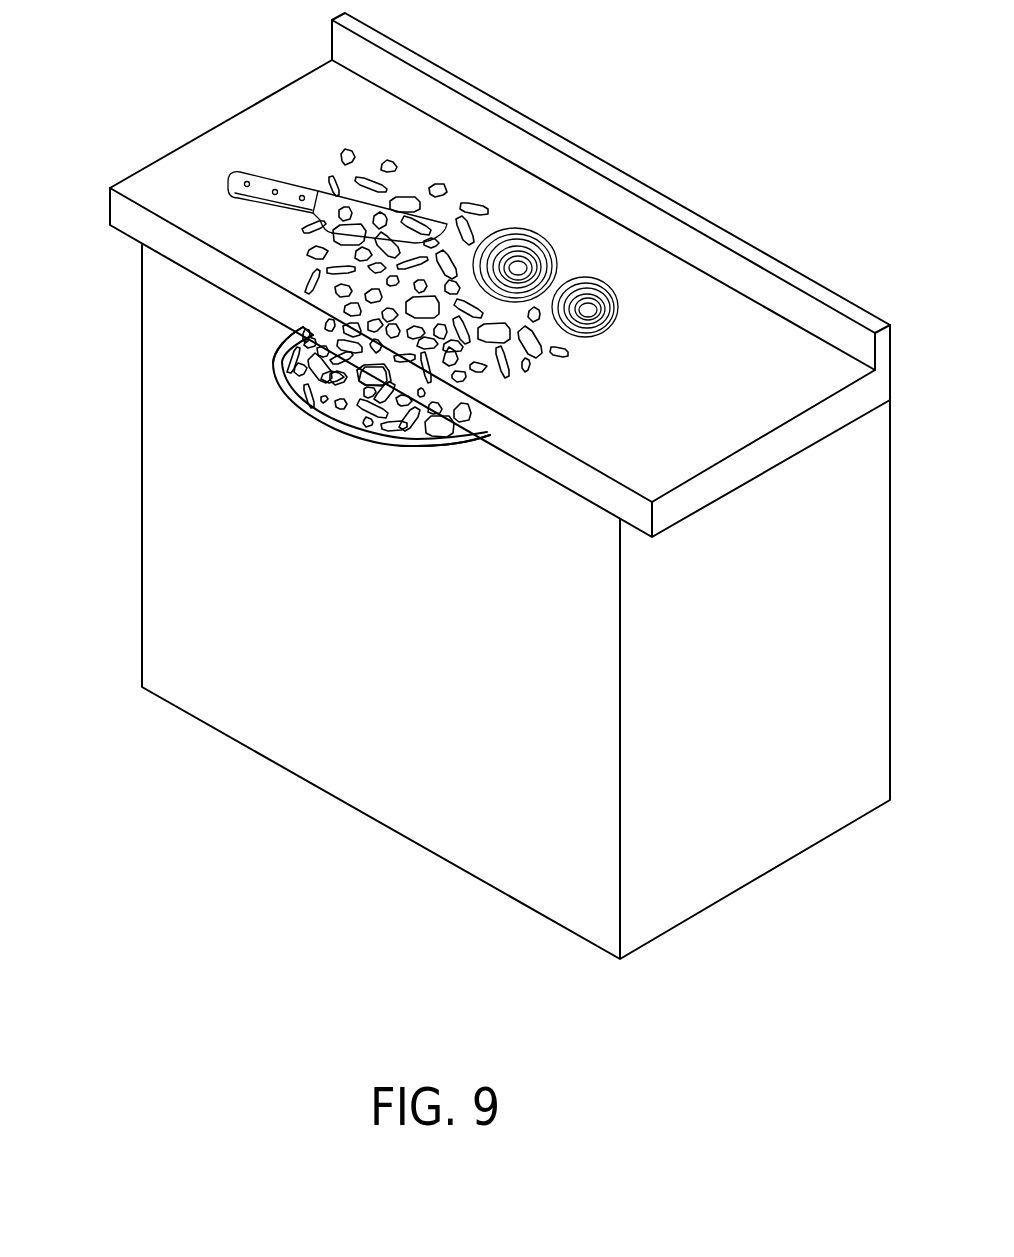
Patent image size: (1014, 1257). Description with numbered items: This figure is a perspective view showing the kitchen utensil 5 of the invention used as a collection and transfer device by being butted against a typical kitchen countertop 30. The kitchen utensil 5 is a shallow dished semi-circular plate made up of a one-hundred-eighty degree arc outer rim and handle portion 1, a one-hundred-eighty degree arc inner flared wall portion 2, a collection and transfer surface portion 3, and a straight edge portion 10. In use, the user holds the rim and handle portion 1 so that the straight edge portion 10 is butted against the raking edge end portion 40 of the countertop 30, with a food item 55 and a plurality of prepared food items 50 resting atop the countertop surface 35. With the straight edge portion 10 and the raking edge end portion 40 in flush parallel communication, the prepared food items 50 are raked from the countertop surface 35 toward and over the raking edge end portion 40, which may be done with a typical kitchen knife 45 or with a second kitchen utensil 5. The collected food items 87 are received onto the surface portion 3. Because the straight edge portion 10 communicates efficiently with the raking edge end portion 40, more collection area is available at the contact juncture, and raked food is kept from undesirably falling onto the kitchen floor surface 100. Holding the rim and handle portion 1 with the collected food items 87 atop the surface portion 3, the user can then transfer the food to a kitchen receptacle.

The kitchen floor surface 100 is at (353, 883).
The kitchen countertop 30 is at (787, 423).
The raking edge end portion 40 is at (546, 477).
The countertop surface 35 is at (373, 127).
The kitchen knife 45 is at (265, 175).
The prepared food items 50 is at (312, 272).
The food item 55 is at (545, 240).
The straight edge portion 10 is at (341, 384).
The outer rim and handle portion 1 is at (317, 441).
The inner flared wall portion 2 is at (272, 401).
The collection and transfer surface portion 3 is at (288, 378).
The kitchen utensil 5 is at (359, 492).
The collected food items 87 is at (433, 435).